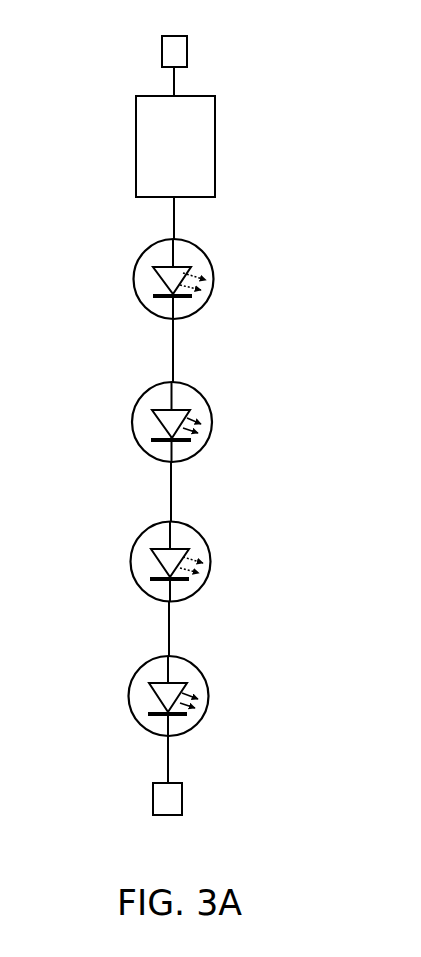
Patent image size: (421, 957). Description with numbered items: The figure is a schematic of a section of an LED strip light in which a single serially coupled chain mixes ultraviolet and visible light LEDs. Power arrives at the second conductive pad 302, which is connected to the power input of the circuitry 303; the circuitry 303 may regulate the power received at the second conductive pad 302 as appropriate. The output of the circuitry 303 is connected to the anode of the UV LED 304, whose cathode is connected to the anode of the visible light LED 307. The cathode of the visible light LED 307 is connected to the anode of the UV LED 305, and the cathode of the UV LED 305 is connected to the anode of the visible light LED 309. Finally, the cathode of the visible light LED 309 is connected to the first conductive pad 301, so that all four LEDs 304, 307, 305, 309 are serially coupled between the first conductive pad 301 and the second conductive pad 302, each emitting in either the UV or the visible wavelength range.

The first conductive pad 301 is at (168, 797).
The second conductive pad 302 is at (167, 52).
The circuitry 303 is at (138, 142).
The UV LED 304 is at (145, 308).
The UV LED 305 is at (137, 587).
The visible light LED 307 is at (137, 447).
The visible light LED 309 is at (130, 713).